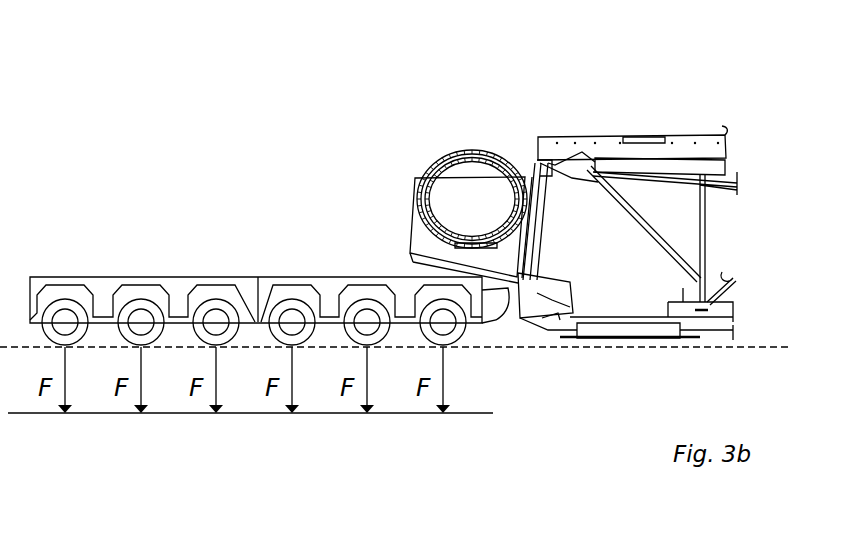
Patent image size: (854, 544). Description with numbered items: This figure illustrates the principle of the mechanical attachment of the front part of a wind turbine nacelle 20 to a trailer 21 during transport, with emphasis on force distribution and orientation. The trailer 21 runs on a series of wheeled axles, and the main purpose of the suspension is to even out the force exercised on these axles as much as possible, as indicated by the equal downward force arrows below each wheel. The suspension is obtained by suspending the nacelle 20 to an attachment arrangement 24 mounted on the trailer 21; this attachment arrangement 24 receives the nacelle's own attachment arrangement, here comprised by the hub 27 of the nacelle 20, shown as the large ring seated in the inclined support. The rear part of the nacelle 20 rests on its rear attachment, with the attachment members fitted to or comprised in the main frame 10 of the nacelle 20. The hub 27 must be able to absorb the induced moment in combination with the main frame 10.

The main frame 10 is at (712, 338).
The nacelle 20 is at (603, 135).
The trailer 21 is at (113, 278).
The attachment arrangement 24 is at (413, 272).
The hub 27 is at (436, 163).